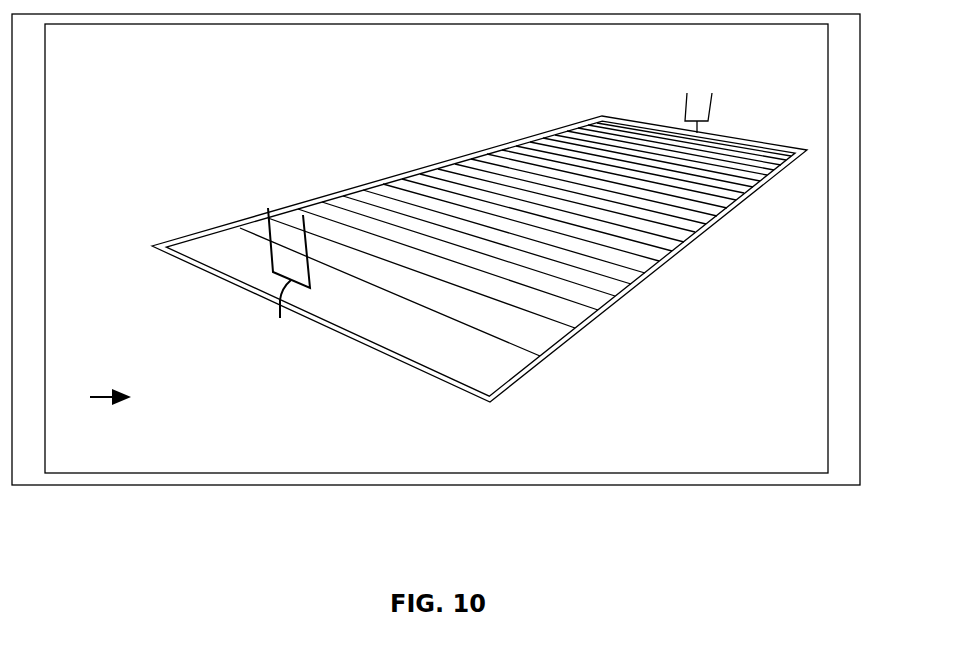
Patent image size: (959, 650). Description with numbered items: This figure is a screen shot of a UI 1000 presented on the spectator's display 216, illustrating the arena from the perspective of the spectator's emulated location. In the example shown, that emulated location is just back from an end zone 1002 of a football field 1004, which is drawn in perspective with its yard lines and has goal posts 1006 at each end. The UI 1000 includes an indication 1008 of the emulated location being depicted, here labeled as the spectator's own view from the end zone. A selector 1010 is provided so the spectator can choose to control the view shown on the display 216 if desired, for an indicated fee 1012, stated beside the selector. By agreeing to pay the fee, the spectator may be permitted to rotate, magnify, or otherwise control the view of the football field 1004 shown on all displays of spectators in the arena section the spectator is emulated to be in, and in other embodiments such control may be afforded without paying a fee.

The spectator's display 216 is at (862, 80).
The UI 1000 is at (193, 134).
The end zone 1002 is at (385, 310).
The football field 1004 is at (650, 280).
The goal posts 1006 is at (279, 232).
The indication 1008 is at (378, 72).
The selector 1010 is at (114, 385).
The indicated fee 1012 is at (228, 422).